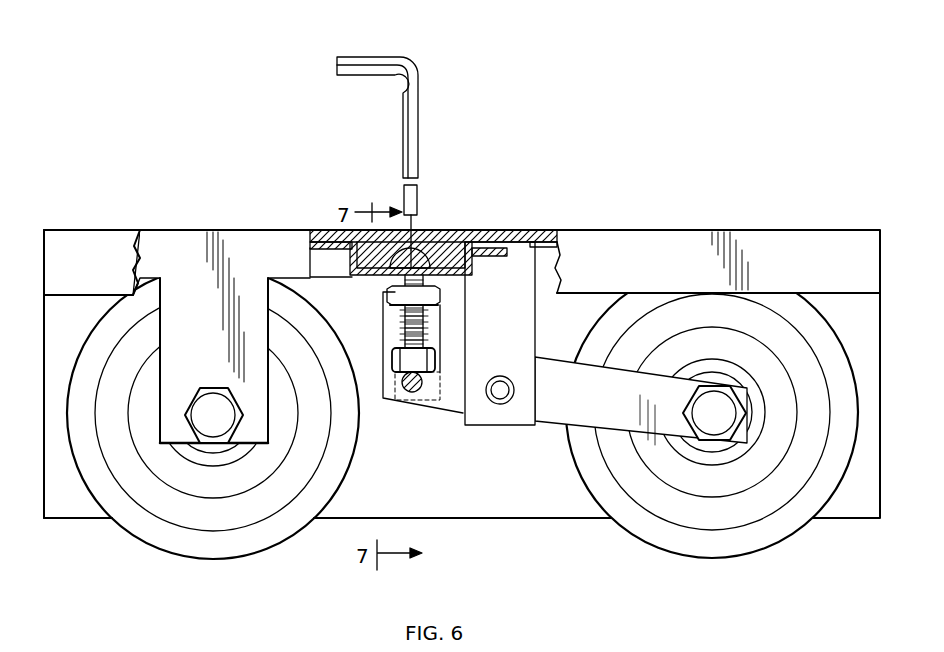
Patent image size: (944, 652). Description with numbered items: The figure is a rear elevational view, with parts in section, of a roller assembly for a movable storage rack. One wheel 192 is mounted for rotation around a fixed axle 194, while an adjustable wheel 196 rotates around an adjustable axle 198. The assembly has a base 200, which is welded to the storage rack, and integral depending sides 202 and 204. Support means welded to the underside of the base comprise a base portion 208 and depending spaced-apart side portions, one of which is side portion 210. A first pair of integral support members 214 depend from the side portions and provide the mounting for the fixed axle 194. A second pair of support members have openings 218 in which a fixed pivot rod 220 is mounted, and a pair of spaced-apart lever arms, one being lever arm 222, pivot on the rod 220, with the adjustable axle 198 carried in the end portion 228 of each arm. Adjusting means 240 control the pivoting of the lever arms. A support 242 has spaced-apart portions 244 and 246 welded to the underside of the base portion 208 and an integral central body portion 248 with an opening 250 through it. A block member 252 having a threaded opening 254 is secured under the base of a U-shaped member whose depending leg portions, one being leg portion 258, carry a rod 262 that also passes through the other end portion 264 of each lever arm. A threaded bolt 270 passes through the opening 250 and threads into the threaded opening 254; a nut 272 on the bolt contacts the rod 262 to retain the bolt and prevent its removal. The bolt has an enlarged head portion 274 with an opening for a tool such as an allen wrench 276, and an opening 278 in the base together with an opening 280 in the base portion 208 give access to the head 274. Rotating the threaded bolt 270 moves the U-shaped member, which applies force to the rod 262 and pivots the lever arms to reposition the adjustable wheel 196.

The wheel 192 is at (236, 557).
The fixed axle 194 is at (205, 420).
The adjustable wheel 196 is at (718, 545).
The adjustable axle 198 is at (725, 414).
The base 200 is at (545, 232).
The depending side 202 is at (525, 512).
The depending side 204 is at (752, 230).
The base portion 208 is at (557, 241).
The side portion 210 is at (332, 268).
The integral support member 214 is at (220, 307).
The opening 218 is at (513, 382).
The fixed pivot rod 220 is at (503, 405).
The lever arm 222 is at (605, 412).
The end portion 228 is at (745, 390).
The adjusting means 240 is at (395, 430).
The support 242 is at (310, 258).
The spaced-apart portion 244 is at (530, 229).
The spaced-apart portion 246 is at (352, 240).
The central body portion 248 is at (440, 235).
The opening 250 is at (395, 303).
The block member 252 is at (440, 302).
The threaded opening 254 is at (440, 320).
The leg portion 258 is at (392, 360).
The rod 262 is at (415, 403).
The other end portion 264 is at (405, 392).
The threaded bolt 270 is at (440, 336).
The nut 272 is at (465, 390).
The enlarged head portion 274 is at (418, 235).
The allen wrench 276 is at (402, 104).
The opening 278 is at (478, 238).
The opening 280 is at (480, 265).